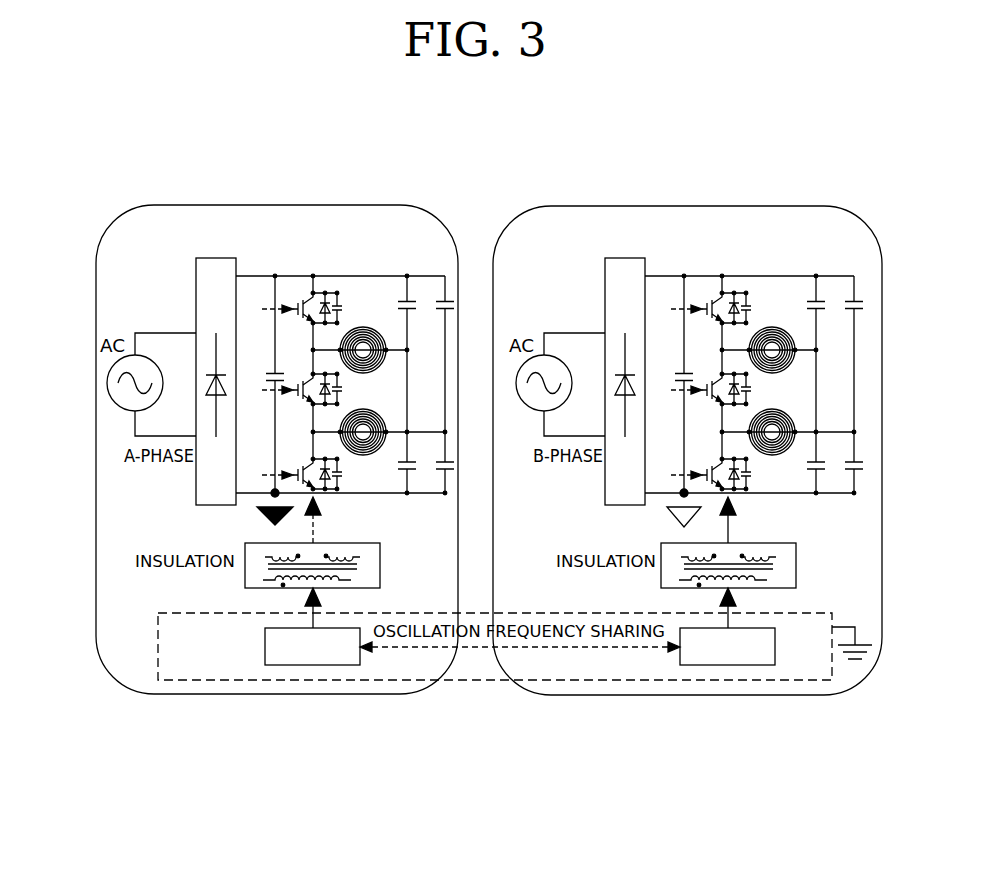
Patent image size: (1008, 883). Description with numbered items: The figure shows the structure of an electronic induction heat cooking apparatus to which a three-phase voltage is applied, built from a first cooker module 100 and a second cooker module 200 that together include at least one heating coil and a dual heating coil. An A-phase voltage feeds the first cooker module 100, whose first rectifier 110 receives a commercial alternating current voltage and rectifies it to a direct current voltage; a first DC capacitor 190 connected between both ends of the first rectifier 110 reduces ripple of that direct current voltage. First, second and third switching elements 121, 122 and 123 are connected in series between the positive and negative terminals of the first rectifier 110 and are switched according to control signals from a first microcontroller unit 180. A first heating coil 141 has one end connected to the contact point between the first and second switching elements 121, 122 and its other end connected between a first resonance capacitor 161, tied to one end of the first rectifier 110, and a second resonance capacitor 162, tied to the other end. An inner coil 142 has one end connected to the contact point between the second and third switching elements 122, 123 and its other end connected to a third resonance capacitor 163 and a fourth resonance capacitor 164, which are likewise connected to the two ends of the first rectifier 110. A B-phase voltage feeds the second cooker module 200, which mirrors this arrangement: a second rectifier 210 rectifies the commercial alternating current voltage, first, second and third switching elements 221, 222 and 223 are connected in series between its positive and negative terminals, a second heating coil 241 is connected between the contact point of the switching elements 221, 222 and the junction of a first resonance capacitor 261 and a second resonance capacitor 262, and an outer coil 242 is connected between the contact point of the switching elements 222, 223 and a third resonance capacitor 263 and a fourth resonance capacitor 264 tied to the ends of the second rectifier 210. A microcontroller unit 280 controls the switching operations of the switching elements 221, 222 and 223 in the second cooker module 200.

The first cooker module 100 is at (282, 205).
The first rectifier 110 is at (196, 314).
The first DC capacitor 190 is at (272, 365).
The first switching element 121 is at (336, 290).
The second switching element 122 is at (342, 393).
The third switching element 123 is at (322, 483).
The first heating coil 141 is at (362, 327).
The inner coil 142 is at (365, 455).
The first resonance capacitor 161 is at (406, 298).
The second resonance capacitor 162 is at (407, 495).
The third resonance capacitor 163 is at (445, 290).
The fourth resonance capacitor 164 is at (443, 482).
The first microcontroller unit 180 is at (313, 665).
The second cooker module 200 is at (687, 424).
The second rectifier 210 is at (582, 381).
The first switching element 221 is at (715, 276).
The second switching element 222 is at (739, 390).
The third switching element 223 is at (721, 499).
The second heating coil 241 is at (772, 328).
The outer coil 242 is at (773, 451).
The first resonance capacitor 261 is at (802, 289).
The second resonance capacitor 262 is at (817, 456).
The third resonance capacitor 263 is at (850, 297).
The fourth resonance capacitor 264 is at (846, 481).
The first microcontroller unit 280 is at (727, 687).